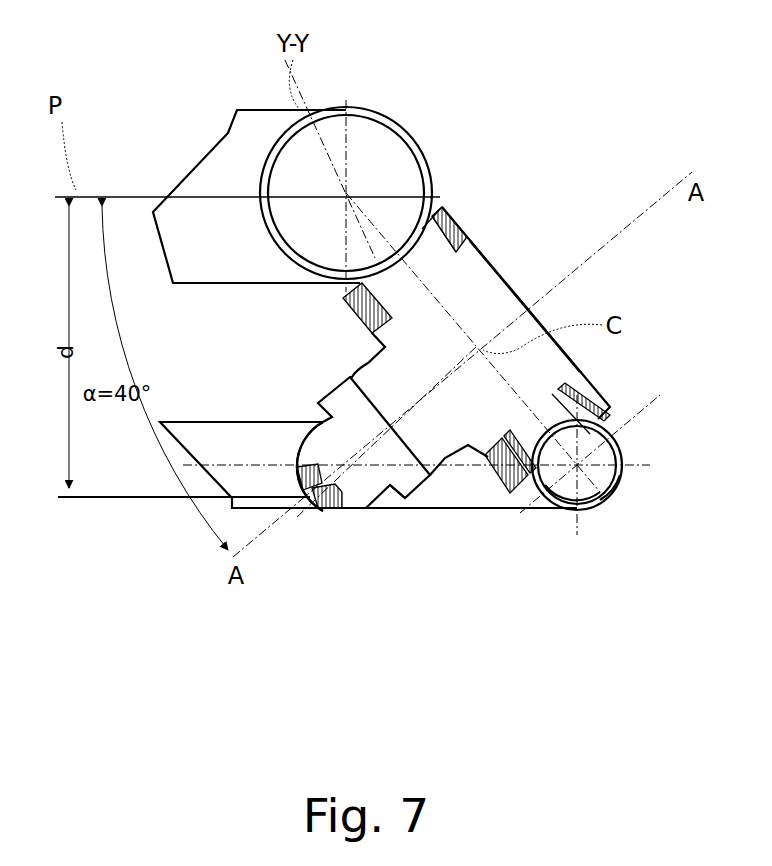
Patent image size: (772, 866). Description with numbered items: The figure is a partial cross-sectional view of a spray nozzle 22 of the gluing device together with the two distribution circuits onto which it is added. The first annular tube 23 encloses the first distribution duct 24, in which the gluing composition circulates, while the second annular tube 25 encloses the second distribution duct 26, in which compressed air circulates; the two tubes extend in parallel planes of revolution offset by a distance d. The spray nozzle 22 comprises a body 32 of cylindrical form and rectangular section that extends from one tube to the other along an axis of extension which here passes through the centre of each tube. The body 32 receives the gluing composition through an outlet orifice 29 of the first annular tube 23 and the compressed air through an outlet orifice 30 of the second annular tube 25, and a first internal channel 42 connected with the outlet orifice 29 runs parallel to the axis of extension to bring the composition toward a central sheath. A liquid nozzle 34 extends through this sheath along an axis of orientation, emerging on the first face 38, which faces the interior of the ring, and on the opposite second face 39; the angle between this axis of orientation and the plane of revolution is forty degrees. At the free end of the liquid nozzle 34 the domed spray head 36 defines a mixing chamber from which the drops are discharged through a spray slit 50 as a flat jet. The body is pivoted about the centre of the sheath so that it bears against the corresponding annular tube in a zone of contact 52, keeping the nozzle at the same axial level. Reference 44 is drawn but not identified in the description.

The spray nozzle 22 is at (287, 388).
The first annular tube 23 is at (619, 497).
The first distribution duct 24 is at (567, 504).
The second annular tube 25 is at (262, 152).
The second distribution duct 26 is at (373, 152).
The outlet orifice 29 is at (568, 437).
The outlet orifice 30 is at (400, 243).
The body 32 is at (473, 240).
The liquid nozzle 34 is at (437, 440).
The spray head 36 is at (365, 512).
The first face 38 is at (487, 482).
The second face 39 is at (473, 228).
The first internal channel 42 is at (563, 404).
The hatched intermediate element 44 is at (393, 303).
The spray slit 50 is at (300, 512).
The zone of contact 52 is at (443, 206).